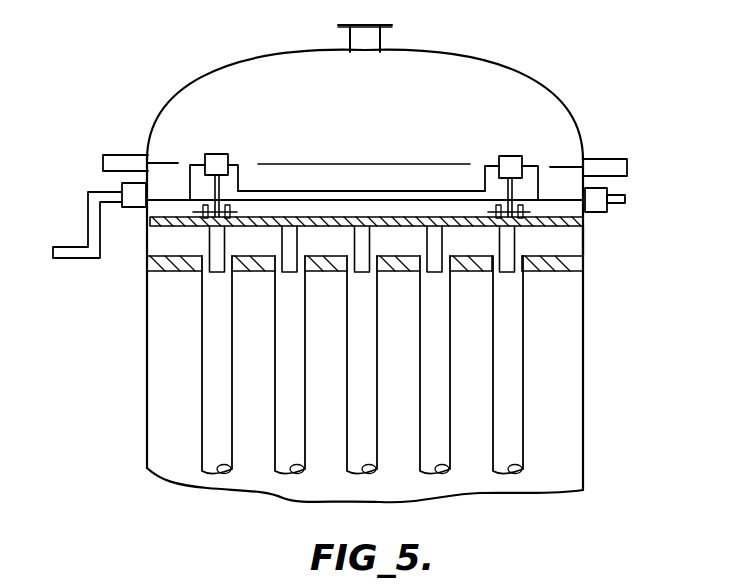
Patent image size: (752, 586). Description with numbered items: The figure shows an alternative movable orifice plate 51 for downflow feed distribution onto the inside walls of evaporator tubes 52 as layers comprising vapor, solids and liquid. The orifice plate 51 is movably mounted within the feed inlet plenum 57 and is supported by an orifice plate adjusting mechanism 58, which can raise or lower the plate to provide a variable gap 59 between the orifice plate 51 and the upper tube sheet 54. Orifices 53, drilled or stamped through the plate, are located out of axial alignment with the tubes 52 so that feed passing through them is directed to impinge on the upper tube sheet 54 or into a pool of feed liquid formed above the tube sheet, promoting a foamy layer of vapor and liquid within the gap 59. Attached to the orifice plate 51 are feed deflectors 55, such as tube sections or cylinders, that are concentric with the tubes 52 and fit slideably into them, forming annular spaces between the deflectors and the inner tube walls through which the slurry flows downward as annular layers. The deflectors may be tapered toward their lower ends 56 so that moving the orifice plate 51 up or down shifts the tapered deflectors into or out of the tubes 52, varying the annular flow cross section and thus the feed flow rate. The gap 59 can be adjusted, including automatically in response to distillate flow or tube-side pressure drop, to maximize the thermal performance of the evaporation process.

The movable orifice plate 51 is at (190, 229).
The evaporator tubes 52 is at (200, 375).
The orifices 53 is at (322, 217).
The upper tube sheet 54 is at (182, 270).
The feed deflectors 55 is at (212, 271).
The lower ends 56 is at (509, 248).
The feed inlet plenum 57 is at (378, 121).
The orifice plate adjusting mechanism 58 is at (86, 229).
The variable gap 59 is at (553, 243).